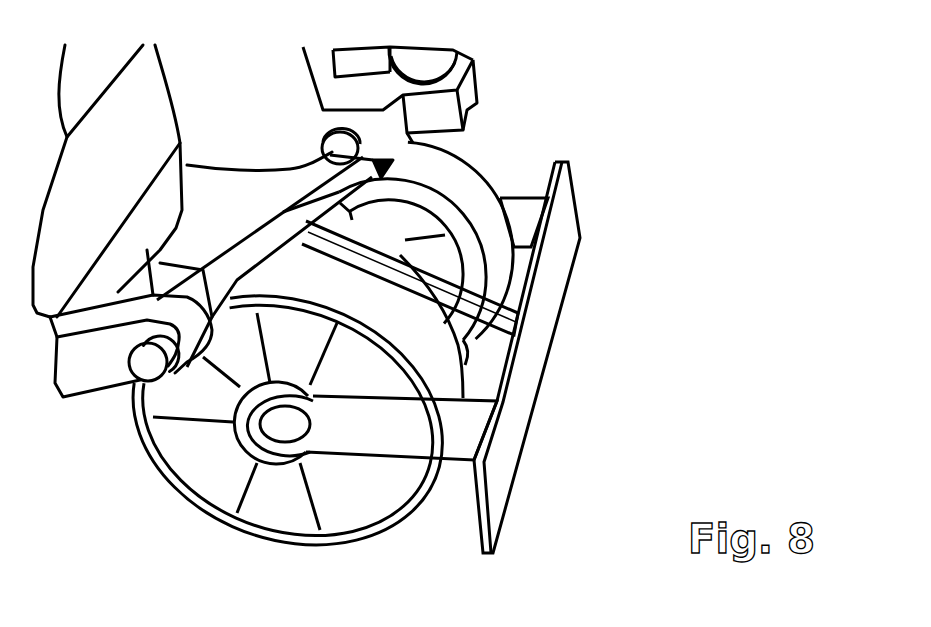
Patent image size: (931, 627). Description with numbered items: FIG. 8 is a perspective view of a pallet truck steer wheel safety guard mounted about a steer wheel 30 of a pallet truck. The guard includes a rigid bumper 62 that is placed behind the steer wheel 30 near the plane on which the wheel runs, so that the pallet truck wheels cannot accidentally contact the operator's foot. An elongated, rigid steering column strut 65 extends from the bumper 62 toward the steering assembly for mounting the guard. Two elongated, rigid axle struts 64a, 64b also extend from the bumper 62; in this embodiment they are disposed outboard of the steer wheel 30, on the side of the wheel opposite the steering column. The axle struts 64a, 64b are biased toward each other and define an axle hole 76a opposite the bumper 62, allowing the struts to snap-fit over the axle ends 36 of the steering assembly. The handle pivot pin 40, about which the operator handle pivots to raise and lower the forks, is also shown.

The steer wheel 30 is at (256, 420).
The axle end 36 is at (272, 488).
The handle pivot pin 40 is at (287, 137).
The bumper 62 is at (547, 357).
The axle strut 64a is at (401, 488).
The axle strut 64b is at (571, 156).
The steering column strut 65 is at (408, 249).
The axle hole 76a is at (311, 502).